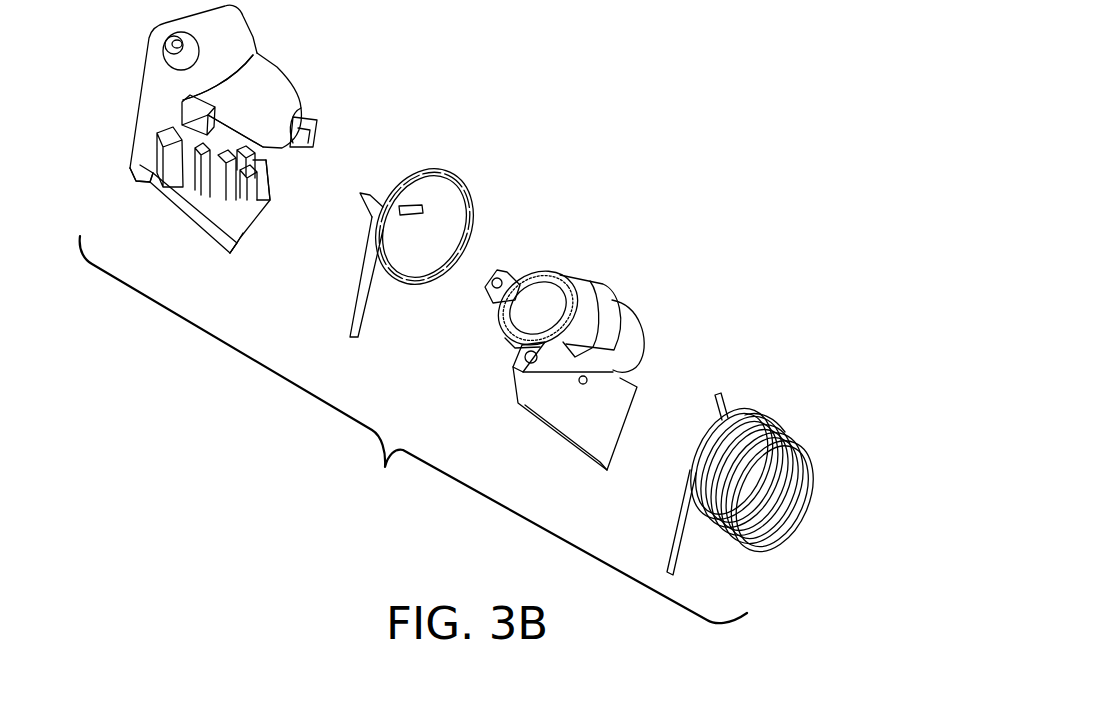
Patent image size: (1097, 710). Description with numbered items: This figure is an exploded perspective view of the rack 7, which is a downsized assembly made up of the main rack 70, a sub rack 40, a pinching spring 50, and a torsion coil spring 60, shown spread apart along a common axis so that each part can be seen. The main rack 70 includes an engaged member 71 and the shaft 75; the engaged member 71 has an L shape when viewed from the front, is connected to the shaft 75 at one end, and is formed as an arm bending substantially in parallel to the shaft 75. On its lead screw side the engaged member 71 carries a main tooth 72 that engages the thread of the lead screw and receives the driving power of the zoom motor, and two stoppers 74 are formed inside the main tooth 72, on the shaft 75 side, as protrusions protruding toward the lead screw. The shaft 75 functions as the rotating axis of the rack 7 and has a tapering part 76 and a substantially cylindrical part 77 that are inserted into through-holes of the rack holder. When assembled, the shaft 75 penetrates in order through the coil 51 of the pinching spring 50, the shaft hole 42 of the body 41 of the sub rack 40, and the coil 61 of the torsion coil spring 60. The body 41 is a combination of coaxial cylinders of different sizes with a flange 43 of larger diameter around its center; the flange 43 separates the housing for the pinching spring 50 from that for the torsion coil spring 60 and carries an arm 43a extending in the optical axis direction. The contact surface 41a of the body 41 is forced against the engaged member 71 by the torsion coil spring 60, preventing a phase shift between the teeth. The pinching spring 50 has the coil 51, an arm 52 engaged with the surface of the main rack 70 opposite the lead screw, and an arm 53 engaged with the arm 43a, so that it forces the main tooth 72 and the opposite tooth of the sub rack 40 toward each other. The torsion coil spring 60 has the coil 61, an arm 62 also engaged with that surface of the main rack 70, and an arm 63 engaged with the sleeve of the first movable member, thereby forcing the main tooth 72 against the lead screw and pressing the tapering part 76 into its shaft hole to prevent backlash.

The rack 7 is at (413, 429).
The sub rack 40 is at (583, 423).
The body 41 is at (627, 340).
The contact surface 41a is at (508, 338).
The shaft hole 42 is at (537, 310).
The flange 43 is at (613, 307).
The arm 43a is at (495, 280).
The pinching spring 50 is at (467, 188).
The coil 51 is at (430, 263).
The arm 52 is at (350, 327).
The arm 53 is at (410, 207).
The torsion coil spring 60 is at (803, 480).
The coil 61 is at (755, 414).
The arm 62 is at (680, 557).
The arm 63 is at (715, 395).
The main rack 70 is at (143, 118).
The engaged member 71 is at (140, 167).
The main tooth 72 is at (237, 220).
The stoppers 74 is at (250, 167).
The shaft 75 is at (267, 88).
The tapering part 76 is at (173, 62).
The cylindrical part 77 is at (307, 128).